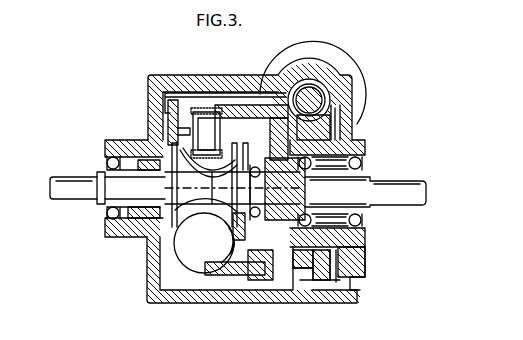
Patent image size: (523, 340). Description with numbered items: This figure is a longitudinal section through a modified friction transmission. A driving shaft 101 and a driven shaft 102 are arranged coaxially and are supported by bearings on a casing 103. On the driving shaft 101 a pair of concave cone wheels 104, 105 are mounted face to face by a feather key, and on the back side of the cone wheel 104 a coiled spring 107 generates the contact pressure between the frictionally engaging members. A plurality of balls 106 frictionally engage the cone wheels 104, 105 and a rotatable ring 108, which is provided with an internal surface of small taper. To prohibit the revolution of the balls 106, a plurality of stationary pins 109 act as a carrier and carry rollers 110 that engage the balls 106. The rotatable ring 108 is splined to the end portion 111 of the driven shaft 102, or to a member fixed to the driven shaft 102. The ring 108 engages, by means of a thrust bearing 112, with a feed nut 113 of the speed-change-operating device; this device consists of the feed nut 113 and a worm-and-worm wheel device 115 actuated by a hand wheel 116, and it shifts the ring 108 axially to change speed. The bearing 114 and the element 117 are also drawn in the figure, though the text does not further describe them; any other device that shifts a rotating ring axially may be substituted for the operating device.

The driving shaft 101 is at (63, 192).
The driven shaft 102 is at (408, 190).
The casing 103 is at (163, 78).
The concave cone wheel 104 is at (172, 233).
The concave cone wheel 105 is at (229, 213).
The ball 106 is at (191, 253).
The coiled spring 107 is at (140, 233).
The rotatable ring 108 is at (257, 97).
The stationary pin 109 is at (172, 133).
The roller 110 is at (197, 112).
The end portion of driven shaft 111 is at (258, 165).
The thrust bearing 112 is at (268, 302).
The feed nut 113 is at (306, 262).
The output bearing 114 is at (352, 146).
The worm-and-worm wheel device 115 is at (337, 110).
The hand wheel 116 is at (343, 66).
The cam plate 117 is at (226, 118).